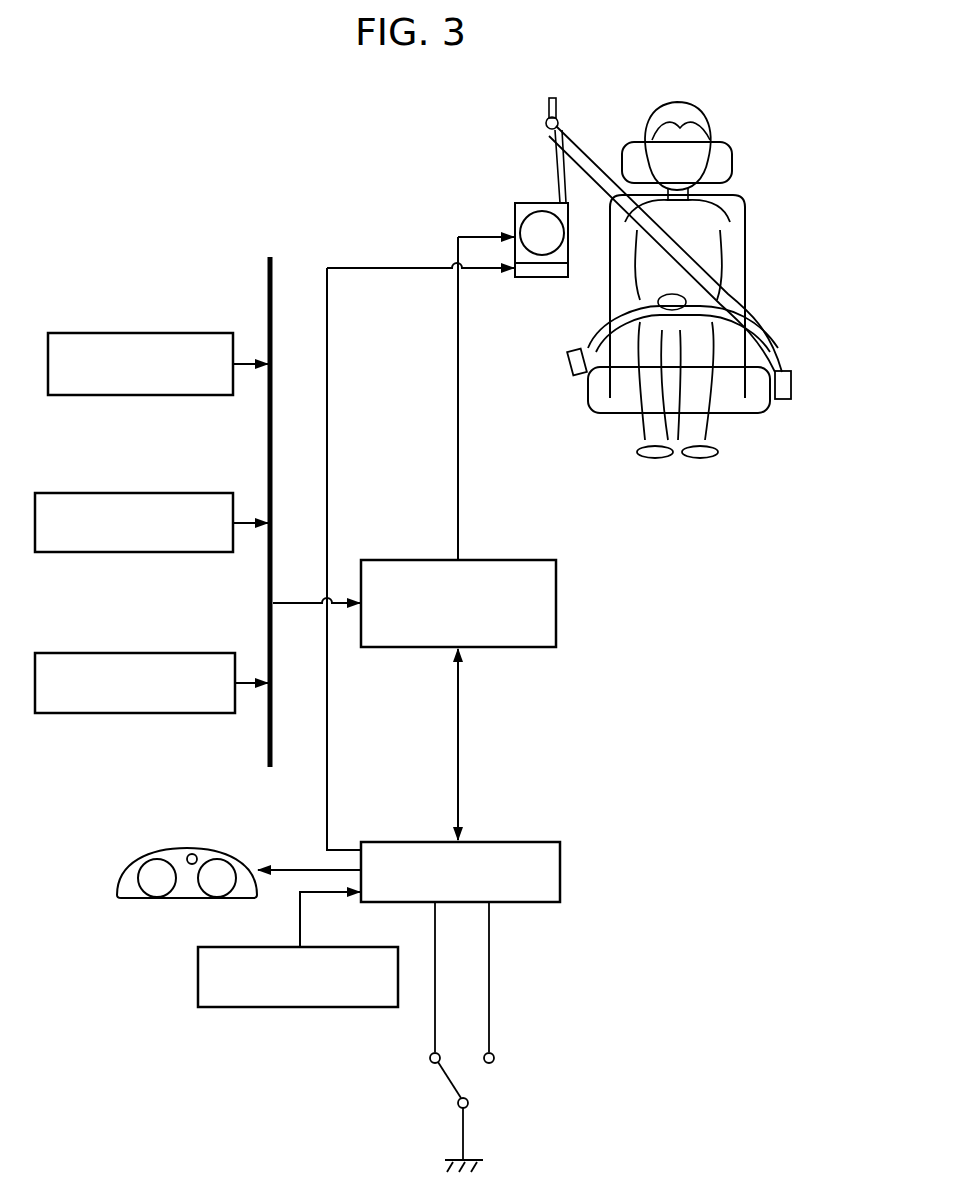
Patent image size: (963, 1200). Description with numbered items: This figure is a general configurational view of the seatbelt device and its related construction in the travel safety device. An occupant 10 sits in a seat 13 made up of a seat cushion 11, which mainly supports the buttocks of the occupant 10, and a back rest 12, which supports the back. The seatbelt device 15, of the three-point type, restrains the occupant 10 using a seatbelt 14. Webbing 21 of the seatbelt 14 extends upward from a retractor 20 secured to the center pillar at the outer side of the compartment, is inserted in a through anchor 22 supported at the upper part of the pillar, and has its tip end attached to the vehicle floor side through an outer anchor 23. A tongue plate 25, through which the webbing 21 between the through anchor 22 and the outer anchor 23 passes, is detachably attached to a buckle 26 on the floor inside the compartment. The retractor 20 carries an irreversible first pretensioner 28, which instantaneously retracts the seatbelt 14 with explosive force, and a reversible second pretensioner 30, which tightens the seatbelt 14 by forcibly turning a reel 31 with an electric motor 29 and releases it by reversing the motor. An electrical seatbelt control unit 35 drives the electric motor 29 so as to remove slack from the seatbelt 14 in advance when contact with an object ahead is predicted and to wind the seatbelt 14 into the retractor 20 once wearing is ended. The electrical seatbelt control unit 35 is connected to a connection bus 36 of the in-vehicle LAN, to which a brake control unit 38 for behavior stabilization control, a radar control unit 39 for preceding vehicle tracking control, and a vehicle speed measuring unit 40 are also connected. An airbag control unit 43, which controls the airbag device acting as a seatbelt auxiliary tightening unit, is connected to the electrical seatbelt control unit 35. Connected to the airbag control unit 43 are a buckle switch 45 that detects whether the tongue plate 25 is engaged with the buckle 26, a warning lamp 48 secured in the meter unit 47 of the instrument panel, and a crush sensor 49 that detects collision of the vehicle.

The occupant 10 is at (706, 112).
The seat cushion 11 is at (612, 420).
The back rest 12 is at (747, 230).
The seat 13 is at (750, 214).
The seatbelt 14 is at (602, 160).
The seatbelt device 15 is at (792, 356).
The retractor 20 is at (513, 218).
The webbing 21 is at (766, 322).
The through anchor 22 is at (557, 117).
The outer anchor 23 is at (574, 378).
The tongue plate 25 is at (795, 398).
The buckle 26 is at (790, 407).
The first pretensioner 28 is at (525, 278).
The electric motor 29 is at (571, 262).
The second pretensioner 30 is at (514, 202).
The reel 31 is at (543, 256).
The electrical seatbelt control unit 35 is at (507, 648).
The connection bus 36 is at (268, 282).
The brake control unit 38 is at (130, 333).
The radar control unit 39 is at (131, 493).
The vehicle speed measuring unit 40 is at (132, 653).
The airbag control unit 43 is at (560, 872).
The buckle switch 45 is at (479, 1083).
The meter unit 47 is at (150, 847).
The warning lamp 48 is at (191, 853).
The crush sensor 49 is at (291, 1008).